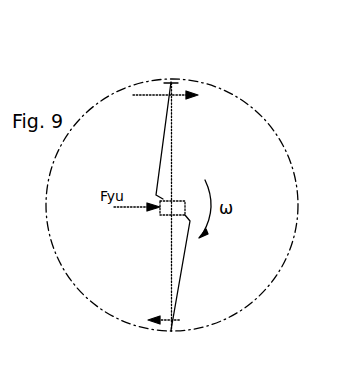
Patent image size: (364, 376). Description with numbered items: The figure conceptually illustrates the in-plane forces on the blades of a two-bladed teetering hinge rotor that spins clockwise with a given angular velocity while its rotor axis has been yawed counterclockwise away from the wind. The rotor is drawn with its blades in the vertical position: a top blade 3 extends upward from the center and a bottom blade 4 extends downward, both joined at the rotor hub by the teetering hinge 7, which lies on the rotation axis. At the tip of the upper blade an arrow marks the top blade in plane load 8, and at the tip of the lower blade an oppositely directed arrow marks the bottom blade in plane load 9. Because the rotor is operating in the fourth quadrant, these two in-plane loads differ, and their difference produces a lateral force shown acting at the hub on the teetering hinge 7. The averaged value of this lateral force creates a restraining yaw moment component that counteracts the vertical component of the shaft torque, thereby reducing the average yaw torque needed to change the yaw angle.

The top blade 3 is at (161, 153).
The bottom blade 4 is at (171, 283).
The teetering hinge 7 is at (161, 215).
The top blade in plane load 8 is at (150, 89).
The bottom blade in plane load 9 is at (172, 331).